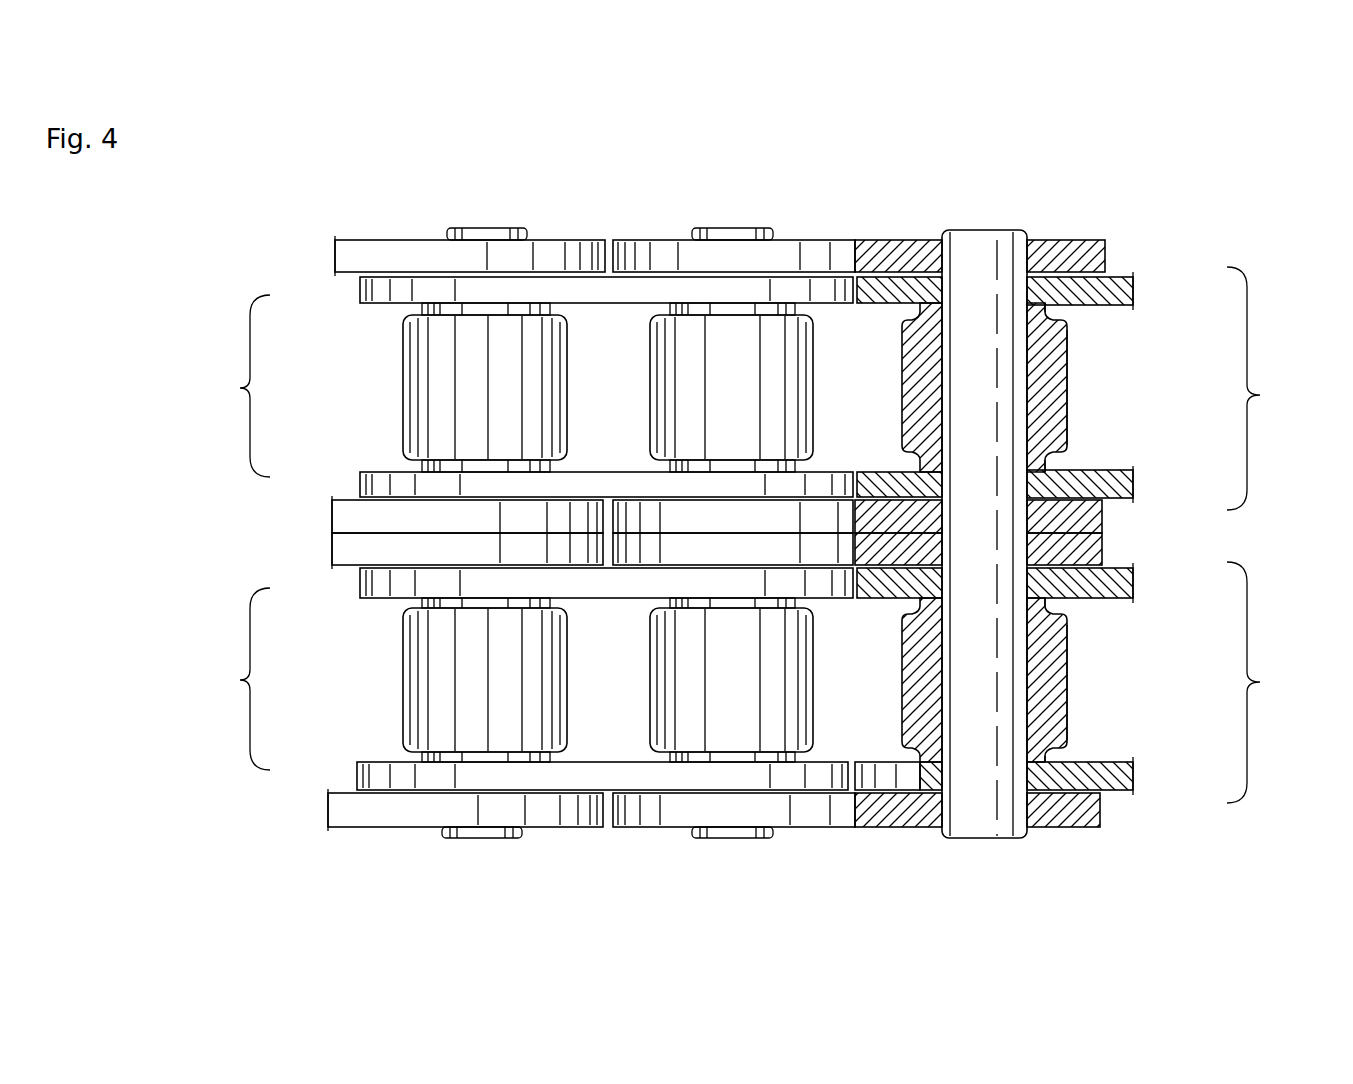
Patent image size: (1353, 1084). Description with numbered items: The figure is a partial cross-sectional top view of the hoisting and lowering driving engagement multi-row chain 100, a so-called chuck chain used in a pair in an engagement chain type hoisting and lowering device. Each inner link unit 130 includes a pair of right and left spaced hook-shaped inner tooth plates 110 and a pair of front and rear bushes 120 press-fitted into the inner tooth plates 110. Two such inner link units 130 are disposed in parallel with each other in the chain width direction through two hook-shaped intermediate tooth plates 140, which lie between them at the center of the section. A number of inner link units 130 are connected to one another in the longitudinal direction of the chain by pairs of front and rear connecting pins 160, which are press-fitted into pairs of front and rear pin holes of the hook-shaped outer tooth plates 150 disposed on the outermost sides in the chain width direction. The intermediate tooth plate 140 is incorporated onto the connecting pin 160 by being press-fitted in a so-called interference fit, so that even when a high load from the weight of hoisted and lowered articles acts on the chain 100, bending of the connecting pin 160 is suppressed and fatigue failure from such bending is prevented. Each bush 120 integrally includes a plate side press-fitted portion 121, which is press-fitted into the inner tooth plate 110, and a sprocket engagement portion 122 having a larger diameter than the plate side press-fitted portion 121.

The hoisting and lowering driving engagement multi-row chain 100 is at (380, 200).
The inner tooth plate 110 is at (372, 290).
The bush 120 is at (412, 382).
The plate side press-fitted portion 121 is at (1065, 310).
The sprocket engagement portion 122 is at (1060, 392).
The inner link unit 130 is at (746, 535).
The intermediate tooth plate 140 is at (350, 551).
The outer tooth plate 150 is at (575, 250).
The connecting pin 160 is at (485, 236).